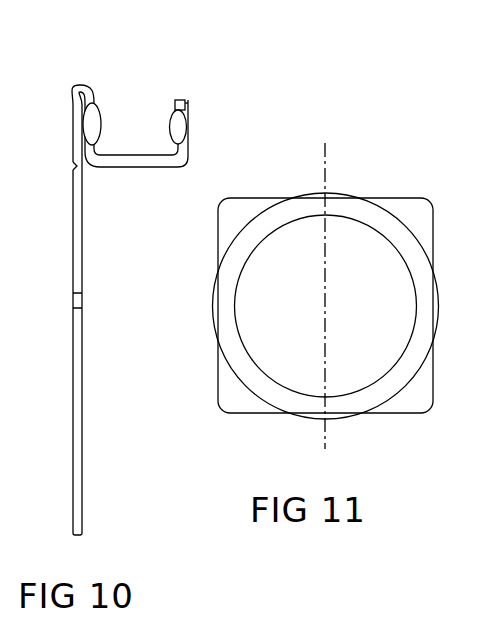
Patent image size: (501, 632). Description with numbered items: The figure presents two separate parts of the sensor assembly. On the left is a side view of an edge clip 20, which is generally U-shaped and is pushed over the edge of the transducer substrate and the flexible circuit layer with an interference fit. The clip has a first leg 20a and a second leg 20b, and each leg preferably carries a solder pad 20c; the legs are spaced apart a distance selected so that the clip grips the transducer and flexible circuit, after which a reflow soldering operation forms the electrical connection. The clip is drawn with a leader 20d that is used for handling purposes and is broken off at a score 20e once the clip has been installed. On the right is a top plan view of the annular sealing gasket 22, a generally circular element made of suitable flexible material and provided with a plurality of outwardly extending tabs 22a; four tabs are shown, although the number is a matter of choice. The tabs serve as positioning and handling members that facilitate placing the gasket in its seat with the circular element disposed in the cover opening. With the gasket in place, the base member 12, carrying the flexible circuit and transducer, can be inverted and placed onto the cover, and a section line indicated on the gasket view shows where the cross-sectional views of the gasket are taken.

In FIG. 10, the edge clip 20 is at (72, 242).
In FIG. 10, the first leg 20a is at (91, 96).
In FIG. 10, the second leg 20b is at (185, 101).
In FIG. 10, the solder pad 20c is at (172, 125).
In FIG. 10, the lower leg 20d is at (78, 395).
In FIG. 10, the score 20e is at (75, 167).
In FIG. 11, the sealing gasket 22 is at (390, 197).
In FIG. 11, the tabs 22a is at (228, 215).
In FIG. 11, the base member 12 is at (326, 144).